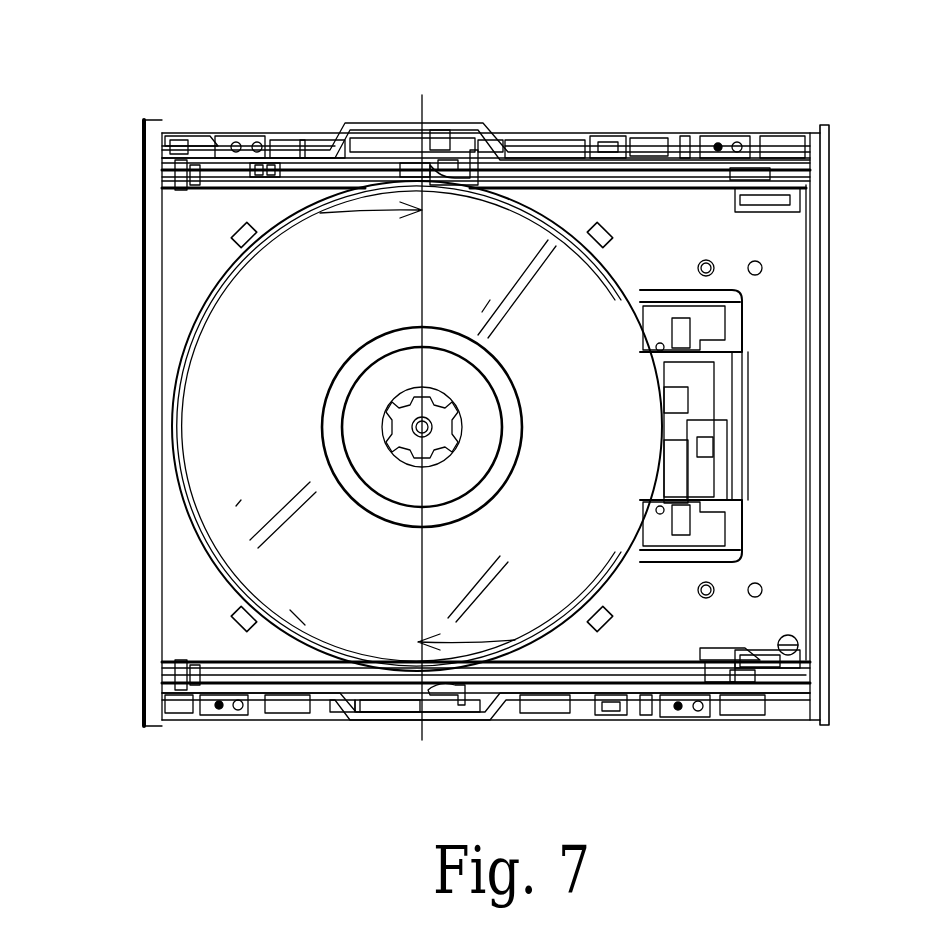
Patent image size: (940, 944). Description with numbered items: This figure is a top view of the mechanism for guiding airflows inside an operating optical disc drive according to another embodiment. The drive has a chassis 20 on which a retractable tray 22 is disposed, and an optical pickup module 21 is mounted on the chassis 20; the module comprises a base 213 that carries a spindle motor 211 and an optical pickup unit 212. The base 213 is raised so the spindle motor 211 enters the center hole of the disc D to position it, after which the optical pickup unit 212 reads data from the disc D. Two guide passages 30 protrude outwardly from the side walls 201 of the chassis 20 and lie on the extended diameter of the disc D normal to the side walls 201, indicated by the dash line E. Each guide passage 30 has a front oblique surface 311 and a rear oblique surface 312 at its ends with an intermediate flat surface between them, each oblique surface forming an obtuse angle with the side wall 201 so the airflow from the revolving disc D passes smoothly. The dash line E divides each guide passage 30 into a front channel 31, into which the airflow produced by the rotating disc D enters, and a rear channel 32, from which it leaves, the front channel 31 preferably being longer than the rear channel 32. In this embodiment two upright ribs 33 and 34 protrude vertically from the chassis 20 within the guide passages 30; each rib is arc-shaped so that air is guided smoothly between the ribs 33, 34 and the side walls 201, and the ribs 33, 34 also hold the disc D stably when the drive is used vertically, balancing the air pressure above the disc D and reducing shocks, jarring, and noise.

The chassis 20 is at (712, 148).
The side walls 201 is at (265, 148).
The optical pickup module 21 is at (732, 389).
The spindle motor 211 is at (420, 427).
The optical pickup unit 212 is at (665, 437).
The base 213 is at (718, 315).
The tray 22 is at (230, 268).
The guide passage 30 is at (407, 132).
The front channel 31 is at (385, 142).
The front oblique surface 311 is at (328, 165).
The rear oblique surface 312 is at (500, 152).
The rear channel 32 is at (497, 148).
The upright rib 33 is at (455, 165).
The upright rib 34 is at (447, 706).
The disc D is at (300, 605).
The dash line E is at (438, 140).